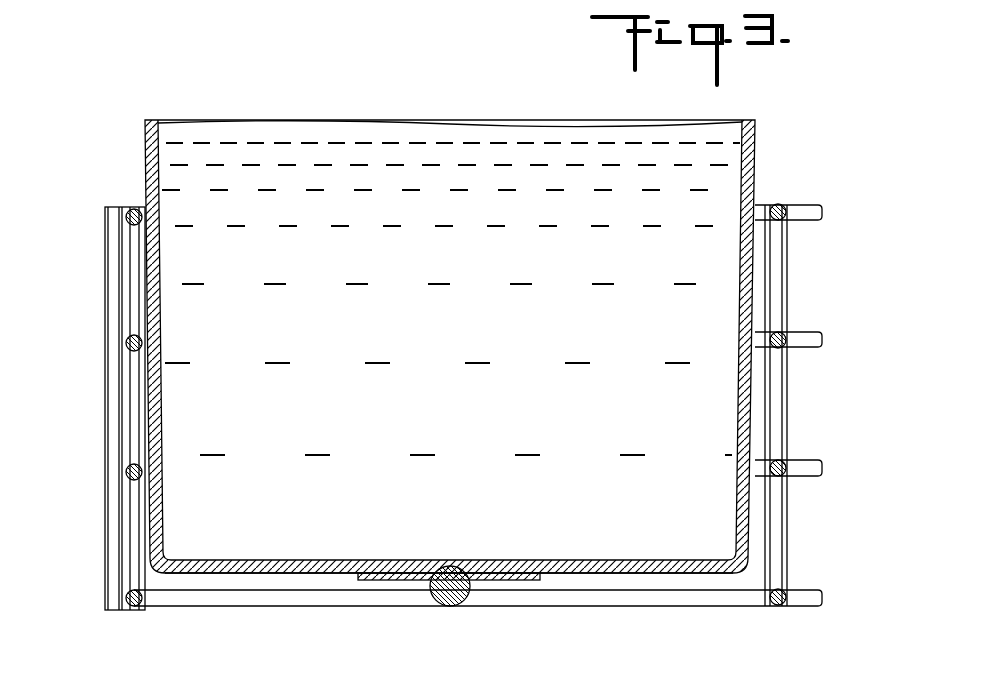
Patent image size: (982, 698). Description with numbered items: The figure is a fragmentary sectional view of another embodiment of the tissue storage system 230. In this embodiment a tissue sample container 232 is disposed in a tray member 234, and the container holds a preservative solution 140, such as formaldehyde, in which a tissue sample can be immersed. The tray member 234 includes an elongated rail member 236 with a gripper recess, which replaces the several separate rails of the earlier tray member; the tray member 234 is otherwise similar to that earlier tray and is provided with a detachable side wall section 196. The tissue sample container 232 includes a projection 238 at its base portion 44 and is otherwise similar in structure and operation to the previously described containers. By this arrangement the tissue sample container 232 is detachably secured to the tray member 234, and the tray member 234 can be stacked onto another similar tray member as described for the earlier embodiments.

The tissue storage system 230 is at (818, 131).
The tissue sample container 232 is at (757, 188).
The tray member 234 is at (790, 431).
The detachable side wall section 196 is at (113, 413).
The preservative solution 140 is at (458, 346).
The base portion 44 is at (705, 573).
The elongated rail member 236 is at (463, 604).
The projection 238 is at (447, 604).